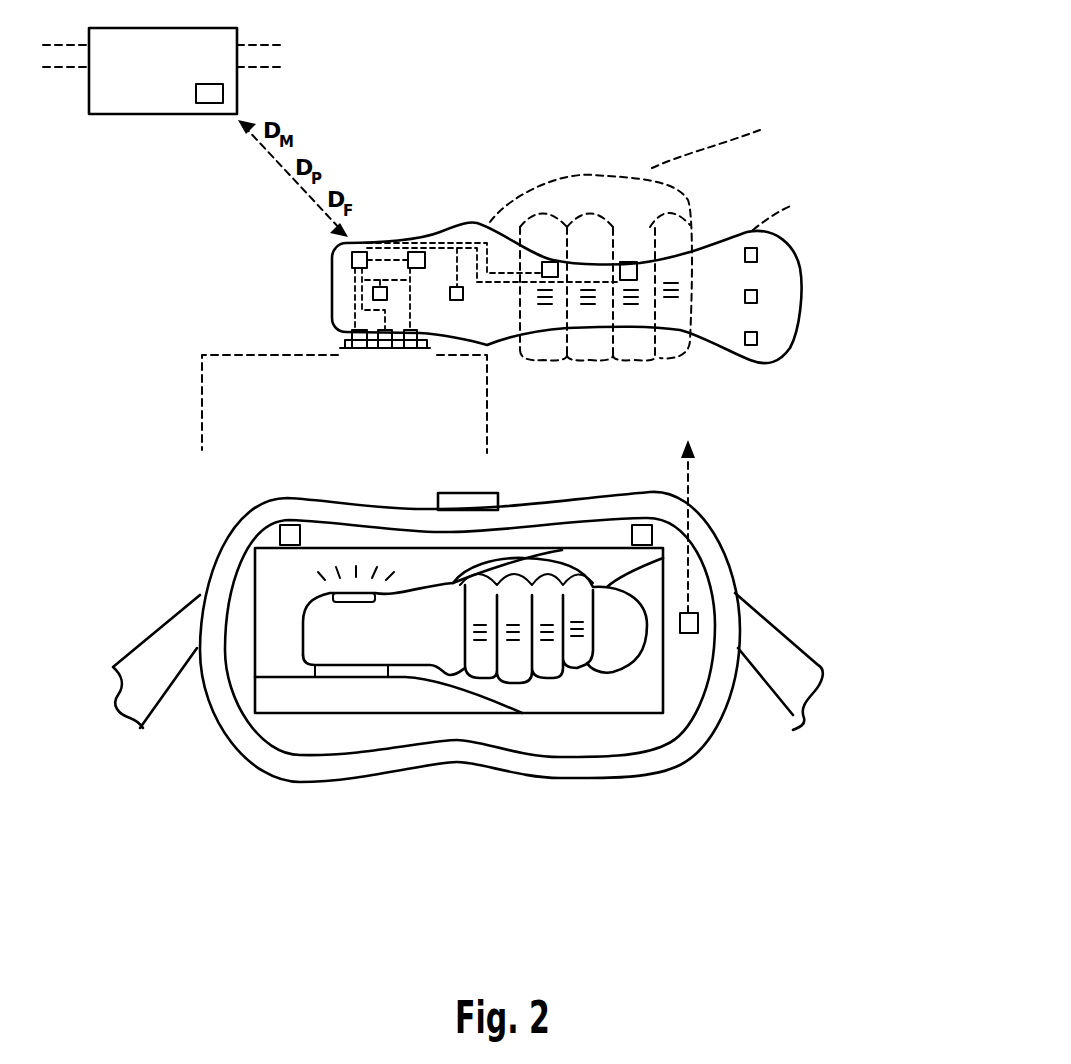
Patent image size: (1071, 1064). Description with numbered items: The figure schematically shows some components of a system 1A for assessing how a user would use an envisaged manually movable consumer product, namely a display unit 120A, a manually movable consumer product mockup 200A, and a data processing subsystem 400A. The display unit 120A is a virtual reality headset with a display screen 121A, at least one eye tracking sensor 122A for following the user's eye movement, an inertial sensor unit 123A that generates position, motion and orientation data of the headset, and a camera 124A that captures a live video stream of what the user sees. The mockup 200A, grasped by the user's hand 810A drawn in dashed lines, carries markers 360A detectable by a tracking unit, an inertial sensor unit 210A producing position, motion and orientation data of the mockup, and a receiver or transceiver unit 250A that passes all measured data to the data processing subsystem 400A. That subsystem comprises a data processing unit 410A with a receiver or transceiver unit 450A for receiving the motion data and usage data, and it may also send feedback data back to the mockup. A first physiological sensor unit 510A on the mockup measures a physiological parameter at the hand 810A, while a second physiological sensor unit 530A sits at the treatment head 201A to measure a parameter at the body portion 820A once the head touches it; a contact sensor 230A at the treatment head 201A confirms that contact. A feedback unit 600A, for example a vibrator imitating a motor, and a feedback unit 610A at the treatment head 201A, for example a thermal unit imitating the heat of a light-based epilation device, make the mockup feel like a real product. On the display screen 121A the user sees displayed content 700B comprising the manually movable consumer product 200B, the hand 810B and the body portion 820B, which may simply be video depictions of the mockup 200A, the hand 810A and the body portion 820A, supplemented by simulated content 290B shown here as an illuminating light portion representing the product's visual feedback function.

The system 1A is at (887, 600).
The display unit 120A is at (768, 518).
The display screen 121A is at (333, 713).
The eye tracking sensor 122A is at (282, 530).
The inertial sensor unit 123A is at (698, 620).
The camera 124A is at (462, 493).
The manually movable consumer product mockup 200A is at (793, 252).
The manually movable consumer product 200B is at (630, 672).
The treatment head 201A is at (372, 350).
The inertial sensor unit 210A is at (415, 252).
The contact sensor 230A is at (410, 352).
The receiver unit or transceiver unit 250A is at (352, 258).
The simulated content 290B is at (325, 562).
The markers 360A is at (380, 287).
The data processing subsystem 400A is at (170, 140).
The data processing unit 410A is at (97, 114).
The receiver unit or transceiver unit 450A is at (209, 103).
The first physiological sensor unit 510A is at (548, 262).
The second physiological sensor unit 530A is at (357, 353).
The feedback unit 600A is at (628, 262).
The feedback unit 610A is at (383, 350).
The displayed content 700B is at (265, 582).
The hand 810A is at (590, 175).
The hand 810B is at (563, 567).
The body portion 820A is at (488, 412).
The body portion 820B is at (447, 703).